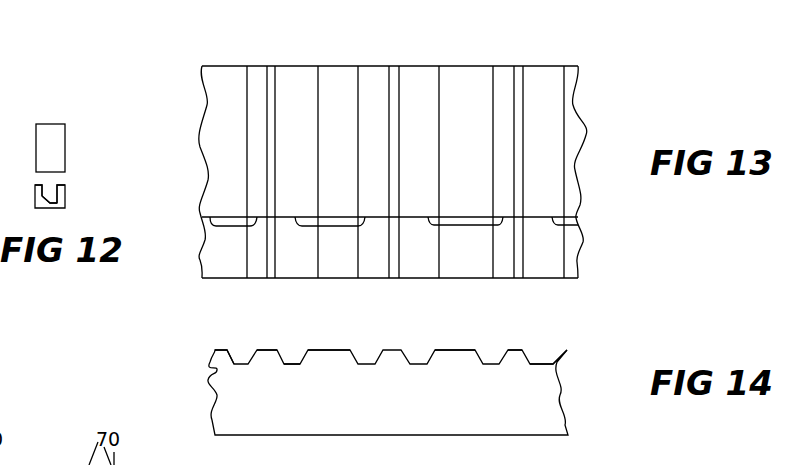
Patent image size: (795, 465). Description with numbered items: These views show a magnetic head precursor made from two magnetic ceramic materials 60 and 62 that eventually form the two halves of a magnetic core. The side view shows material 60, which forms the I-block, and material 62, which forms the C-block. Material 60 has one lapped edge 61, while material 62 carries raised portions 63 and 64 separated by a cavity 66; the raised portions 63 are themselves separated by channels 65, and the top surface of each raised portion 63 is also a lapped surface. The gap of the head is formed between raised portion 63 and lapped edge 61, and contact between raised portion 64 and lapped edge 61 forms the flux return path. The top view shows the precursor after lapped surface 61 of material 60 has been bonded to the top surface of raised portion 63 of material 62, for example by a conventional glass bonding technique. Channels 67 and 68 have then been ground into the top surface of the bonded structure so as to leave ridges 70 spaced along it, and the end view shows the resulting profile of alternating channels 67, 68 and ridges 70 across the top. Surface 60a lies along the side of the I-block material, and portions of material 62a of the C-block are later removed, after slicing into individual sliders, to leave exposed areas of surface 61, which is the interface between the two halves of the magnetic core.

In FIG. 12, the magnetic ceramic material 60 is at (66, 145).
In FIG. 12, the magnetic ceramic material 62 is at (53, 206).
In FIG. 13, the material 62a is at (580, 254).
In FIG. 14, the material 62a is at (557, 398).
In FIG. 13, the upper die surface 60a is at (578, 118).
In FIG. 13, the lapped edge 61 is at (575, 218).
In FIG. 12, the raised portion 63 is at (34, 187).
In FIG. 12, the raised portion 64 is at (60, 186).
In FIG. 13, the channel 65 is at (342, 221).
In FIG. 12, the cavity 66 is at (52, 198).
In FIG. 13, the channel 67 is at (257, 65).
In FIG. 14, the channel 67 is at (233, 351).
In FIG. 13, the channel 68 is at (312, 67).
In FIG. 14, the channel 68 is at (305, 357).
In FIG. 13, the ridge 70 is at (273, 65).
In FIG. 14, the ridge 70 is at (265, 350).